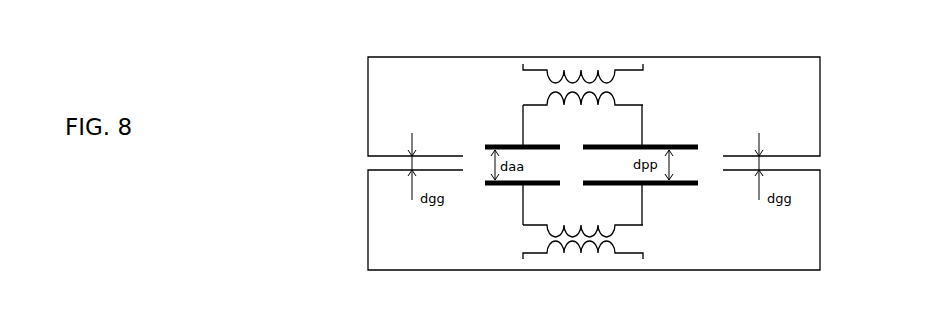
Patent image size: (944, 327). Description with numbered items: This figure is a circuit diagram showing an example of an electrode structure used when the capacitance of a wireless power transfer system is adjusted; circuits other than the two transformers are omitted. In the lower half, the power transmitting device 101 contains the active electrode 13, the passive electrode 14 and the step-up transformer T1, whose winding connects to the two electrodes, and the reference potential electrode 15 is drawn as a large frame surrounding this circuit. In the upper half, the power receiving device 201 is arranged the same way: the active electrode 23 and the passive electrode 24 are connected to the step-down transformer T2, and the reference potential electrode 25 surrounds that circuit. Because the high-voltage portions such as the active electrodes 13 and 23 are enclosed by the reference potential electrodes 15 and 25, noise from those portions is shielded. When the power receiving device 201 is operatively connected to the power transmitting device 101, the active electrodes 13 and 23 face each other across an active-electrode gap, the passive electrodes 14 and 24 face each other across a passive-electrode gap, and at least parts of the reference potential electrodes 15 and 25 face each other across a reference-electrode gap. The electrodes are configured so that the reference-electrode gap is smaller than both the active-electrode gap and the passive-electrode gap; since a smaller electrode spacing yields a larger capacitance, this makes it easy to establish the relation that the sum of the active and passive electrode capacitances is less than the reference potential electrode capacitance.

The power receiving device 201 is at (341, 102).
The power transmitting device 101 is at (341, 212).
The reference potential electrode 25 is at (394, 57).
The reference potential electrode 15 is at (394, 270).
The step-down transformer T2 is at (516, 88).
The step-up transformer T1 is at (515, 245).
The active electrode 23 is at (486, 145).
The passive electrode 24 is at (684, 145).
The active electrode 13 is at (497, 186).
The passive electrode 14 is at (697, 186).